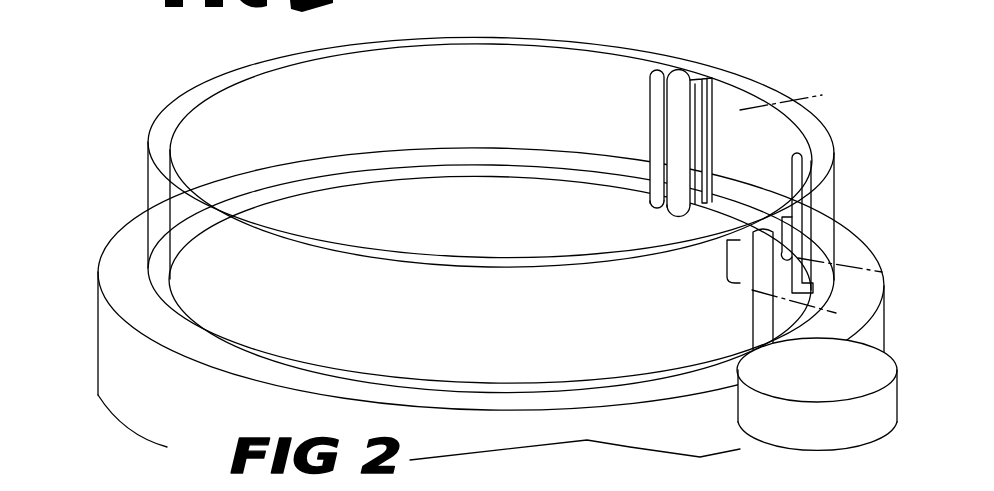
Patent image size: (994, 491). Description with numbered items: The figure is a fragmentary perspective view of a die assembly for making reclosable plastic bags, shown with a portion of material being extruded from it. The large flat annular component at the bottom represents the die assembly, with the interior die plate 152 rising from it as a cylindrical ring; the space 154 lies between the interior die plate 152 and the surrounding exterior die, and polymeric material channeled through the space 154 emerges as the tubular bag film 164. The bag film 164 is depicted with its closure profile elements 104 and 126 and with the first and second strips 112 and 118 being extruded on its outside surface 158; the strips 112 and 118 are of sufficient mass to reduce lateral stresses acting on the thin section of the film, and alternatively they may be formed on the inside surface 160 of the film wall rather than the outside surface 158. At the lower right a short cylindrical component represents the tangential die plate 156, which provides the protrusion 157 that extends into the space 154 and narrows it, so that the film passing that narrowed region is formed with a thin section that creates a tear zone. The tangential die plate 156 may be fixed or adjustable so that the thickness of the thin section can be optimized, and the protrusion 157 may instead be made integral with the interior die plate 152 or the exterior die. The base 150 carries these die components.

The closure profile element 104 is at (693, 77).
The first strip 112 is at (787, 197).
The second strip 118 is at (728, 262).
The closure profile element 126 is at (810, 147).
The base 150 is at (186, 418).
The interior die plate 152 is at (491, 199).
The space 154 is at (545, 385).
The tangential die plate 156 is at (850, 385).
The protrusion 157 is at (763, 348).
The outside surface 158 is at (468, 267).
The inside surface 160 is at (478, 258).
The bag film 164 is at (492, 53).